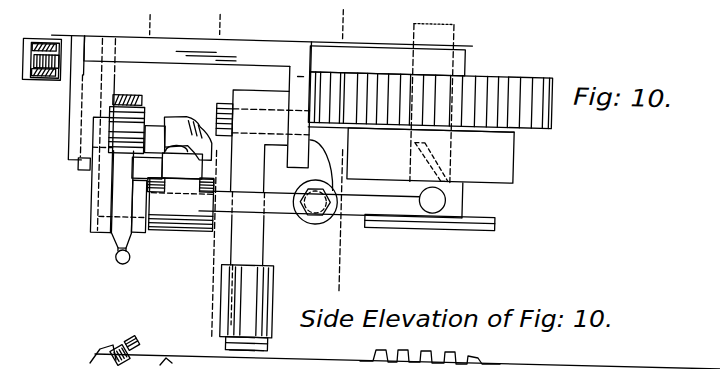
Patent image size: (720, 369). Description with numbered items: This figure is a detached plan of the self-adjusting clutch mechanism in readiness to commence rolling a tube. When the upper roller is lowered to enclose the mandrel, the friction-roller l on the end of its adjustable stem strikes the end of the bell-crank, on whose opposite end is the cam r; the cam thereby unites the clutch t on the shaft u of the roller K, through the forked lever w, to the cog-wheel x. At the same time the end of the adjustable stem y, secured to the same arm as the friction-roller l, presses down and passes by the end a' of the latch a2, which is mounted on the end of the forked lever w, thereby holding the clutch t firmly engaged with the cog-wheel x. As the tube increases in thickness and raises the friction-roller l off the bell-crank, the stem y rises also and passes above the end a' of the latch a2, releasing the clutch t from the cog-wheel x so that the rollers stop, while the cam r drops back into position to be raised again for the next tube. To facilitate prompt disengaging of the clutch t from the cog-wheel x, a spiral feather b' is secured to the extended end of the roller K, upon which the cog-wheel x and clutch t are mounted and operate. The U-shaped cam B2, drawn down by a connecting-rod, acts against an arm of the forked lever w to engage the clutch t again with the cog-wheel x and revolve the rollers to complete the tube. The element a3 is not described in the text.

The friction-roller l is at (26, 93).
The adjustable stem y is at (127, 118).
The end of the latch a' is at (156, 124).
The cam r is at (187, 138).
The block a3 is at (186, 172).
The latch a2 is at (202, 213).
The U-shaped cam B2 is at (263, 140).
The forked lever w is at (294, 201).
The shaft of the roller K u is at (432, 103).
The cog-wheel x is at (430, 89).
The clutch t is at (515, 131).
The spiral feather b' is at (431, 162).